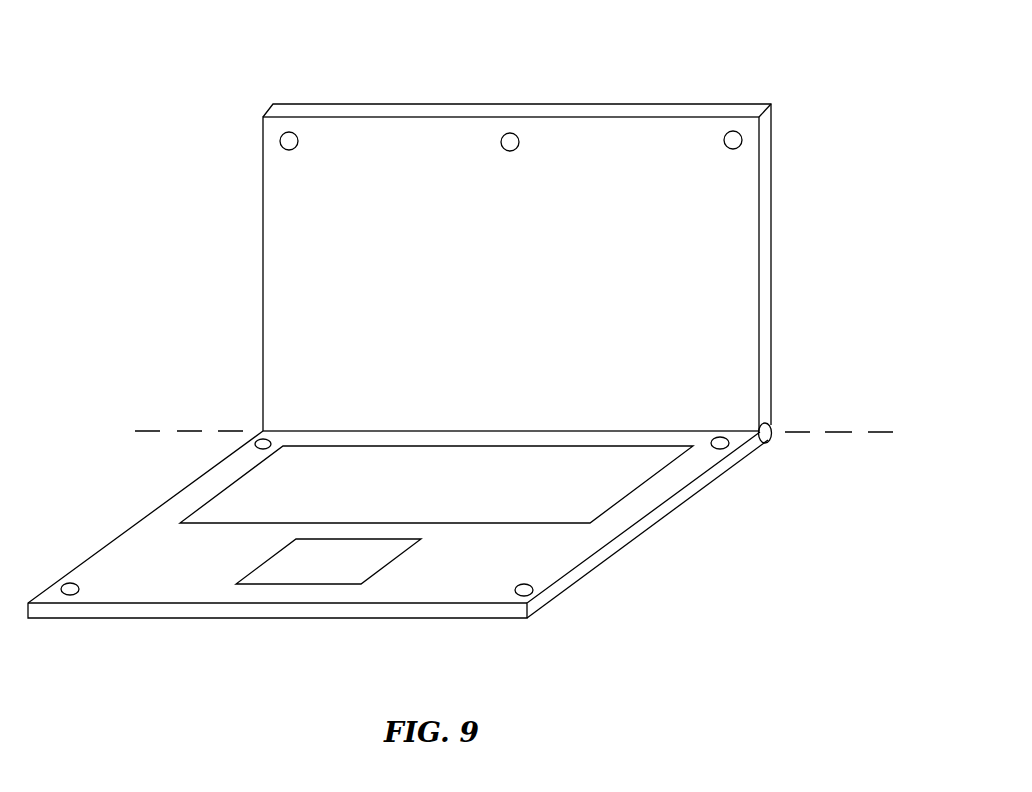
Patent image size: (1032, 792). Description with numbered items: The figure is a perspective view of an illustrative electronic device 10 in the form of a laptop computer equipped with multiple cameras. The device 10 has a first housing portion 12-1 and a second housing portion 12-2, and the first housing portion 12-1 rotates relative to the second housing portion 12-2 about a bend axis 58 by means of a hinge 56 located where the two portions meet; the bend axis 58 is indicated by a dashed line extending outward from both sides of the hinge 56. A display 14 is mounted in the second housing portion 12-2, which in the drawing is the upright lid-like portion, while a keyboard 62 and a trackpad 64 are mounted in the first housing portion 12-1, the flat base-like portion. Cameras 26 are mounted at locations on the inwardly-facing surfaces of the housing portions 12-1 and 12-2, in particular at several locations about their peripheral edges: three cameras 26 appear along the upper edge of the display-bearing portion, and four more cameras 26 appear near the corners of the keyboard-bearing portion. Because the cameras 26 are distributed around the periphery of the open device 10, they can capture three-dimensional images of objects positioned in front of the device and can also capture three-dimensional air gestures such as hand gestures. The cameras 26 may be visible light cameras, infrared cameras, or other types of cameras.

The electronic device 10 is at (472, 362).
The first housing portion 12-1 is at (529, 267).
The second housing portion 12-2 is at (398, 546).
The display 14 is at (303, 268).
The cameras 26 is at (291, 132).
The hinge 56 is at (770, 430).
The bend axis 58 is at (150, 429).
The keyboard 62 is at (202, 524).
The trackpad 64 is at (305, 585).